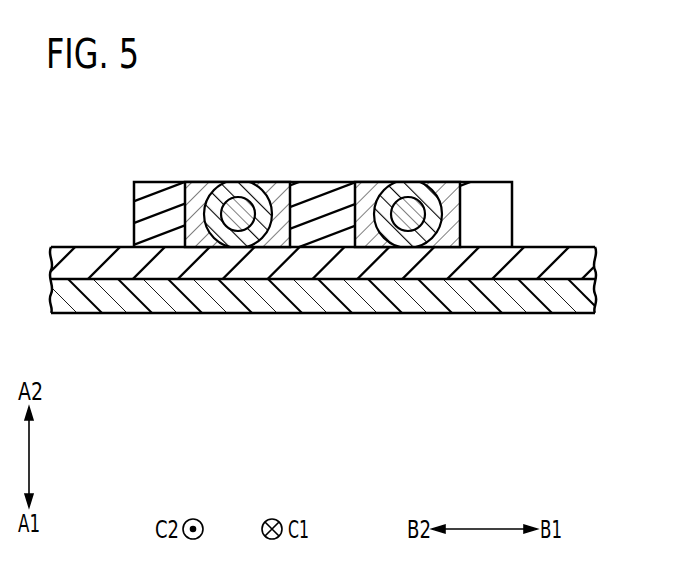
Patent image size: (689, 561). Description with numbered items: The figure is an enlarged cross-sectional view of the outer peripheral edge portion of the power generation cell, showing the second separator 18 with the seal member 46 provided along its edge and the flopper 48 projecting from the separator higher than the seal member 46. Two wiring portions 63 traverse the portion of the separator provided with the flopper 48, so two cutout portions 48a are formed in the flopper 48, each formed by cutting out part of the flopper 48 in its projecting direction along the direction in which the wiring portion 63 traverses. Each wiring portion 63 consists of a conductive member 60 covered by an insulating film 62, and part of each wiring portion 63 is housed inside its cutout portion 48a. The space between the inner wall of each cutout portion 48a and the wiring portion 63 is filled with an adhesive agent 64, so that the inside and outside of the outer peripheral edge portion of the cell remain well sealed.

The second separator 18 is at (553, 298).
The seal member 46 is at (557, 253).
The flopper 48 is at (319, 195).
The cutout portion 48a is at (315, 262).
The conductive member 60 is at (236, 215).
The insulating film 62 is at (256, 232).
The wiring portion 63 is at (324, 290).
The adhesive agent 64 is at (277, 195).